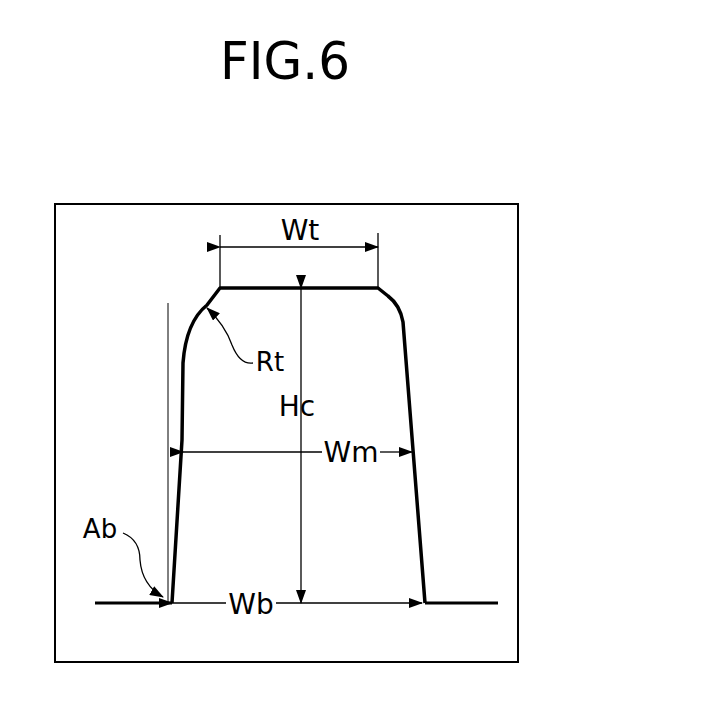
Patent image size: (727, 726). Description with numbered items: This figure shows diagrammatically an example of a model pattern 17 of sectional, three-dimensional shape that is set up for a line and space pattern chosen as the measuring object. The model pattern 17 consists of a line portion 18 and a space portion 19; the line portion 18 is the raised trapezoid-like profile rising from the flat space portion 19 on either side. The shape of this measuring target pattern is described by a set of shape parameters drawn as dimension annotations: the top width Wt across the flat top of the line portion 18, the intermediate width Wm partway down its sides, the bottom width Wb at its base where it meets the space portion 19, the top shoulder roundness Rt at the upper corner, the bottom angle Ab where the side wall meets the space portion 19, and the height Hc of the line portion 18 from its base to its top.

The model pattern 17 is at (502, 238).
The line portion 18 is at (211, 306).
The space portion 19 is at (473, 603).